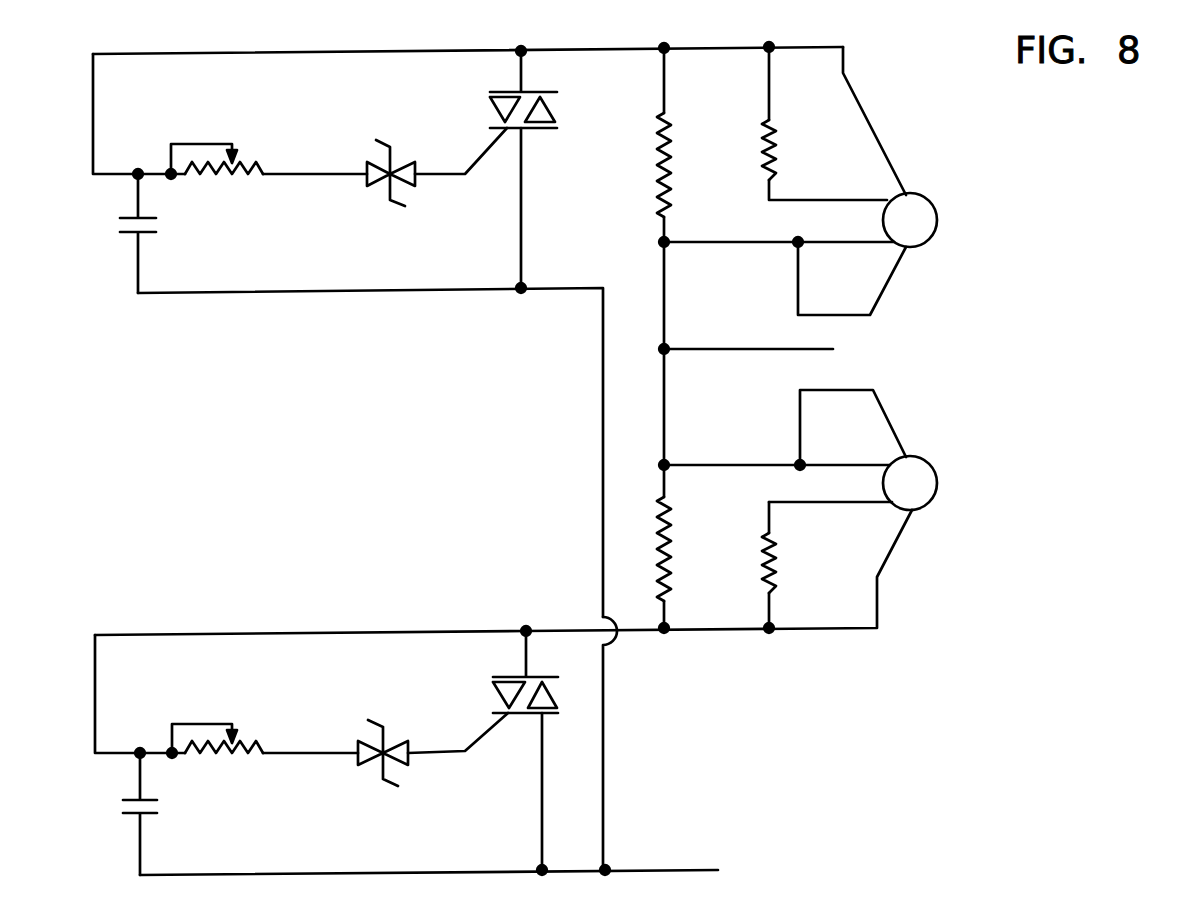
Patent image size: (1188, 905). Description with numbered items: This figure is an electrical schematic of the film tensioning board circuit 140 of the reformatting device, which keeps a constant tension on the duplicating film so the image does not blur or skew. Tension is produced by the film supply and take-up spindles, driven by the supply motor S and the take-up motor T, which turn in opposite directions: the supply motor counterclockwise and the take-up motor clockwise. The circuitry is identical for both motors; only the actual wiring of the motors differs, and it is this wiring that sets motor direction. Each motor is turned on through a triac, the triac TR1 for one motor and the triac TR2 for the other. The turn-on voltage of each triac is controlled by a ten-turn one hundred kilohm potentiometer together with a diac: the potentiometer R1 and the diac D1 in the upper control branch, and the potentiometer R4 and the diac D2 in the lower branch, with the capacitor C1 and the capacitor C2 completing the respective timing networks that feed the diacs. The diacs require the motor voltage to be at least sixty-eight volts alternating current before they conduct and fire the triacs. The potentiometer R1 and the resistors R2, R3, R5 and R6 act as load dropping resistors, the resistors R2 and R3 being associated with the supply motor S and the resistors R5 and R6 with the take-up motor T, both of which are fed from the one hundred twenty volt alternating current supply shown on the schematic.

The film tensioning board circuit 140 is at (305, 424).
The potentiometer R1 is at (217, 126).
The capacitor C1 is at (185, 233).
The diac D1 is at (403, 172).
The triac TR1 is at (530, 89).
The load dropping resistor R2 is at (707, 152).
The load dropping resistor R3 is at (806, 133).
The supply motor S is at (910, 220).
The take-up motor T is at (910, 483).
The load dropping resistor R5 is at (707, 549).
The load dropping resistor R6 is at (810, 548).
The potentiometer R4 is at (217, 710).
The capacitor C2 is at (188, 814).
The diac D2 is at (403, 746).
The triac TR2 is at (535, 672).